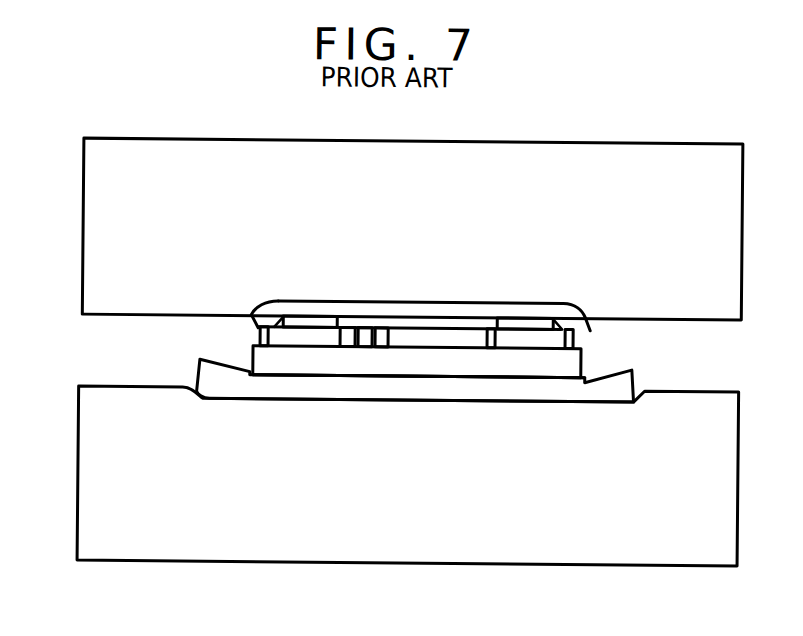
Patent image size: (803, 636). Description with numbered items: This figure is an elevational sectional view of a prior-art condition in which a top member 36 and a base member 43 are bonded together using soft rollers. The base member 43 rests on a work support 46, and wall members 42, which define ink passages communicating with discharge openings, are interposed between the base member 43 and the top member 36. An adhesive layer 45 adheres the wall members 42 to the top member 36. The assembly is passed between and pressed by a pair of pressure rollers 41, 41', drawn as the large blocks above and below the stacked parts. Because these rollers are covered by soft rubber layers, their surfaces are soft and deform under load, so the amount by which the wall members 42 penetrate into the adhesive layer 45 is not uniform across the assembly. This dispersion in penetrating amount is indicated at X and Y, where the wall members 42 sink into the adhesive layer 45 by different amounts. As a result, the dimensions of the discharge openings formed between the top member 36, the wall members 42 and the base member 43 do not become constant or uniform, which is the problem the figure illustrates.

The pressure roller 41 is at (442, 229).
The pressure roller 41' is at (440, 476).
The top member 36 is at (570, 313).
The adhesive layer 45 is at (572, 327).
The wall members 42 is at (581, 343).
The base member 43 is at (572, 360).
The work support 46 is at (613, 387).
The dispersion in penetrating amount X is at (249, 317).
The dispersion in penetrating amount Y is at (337, 326).